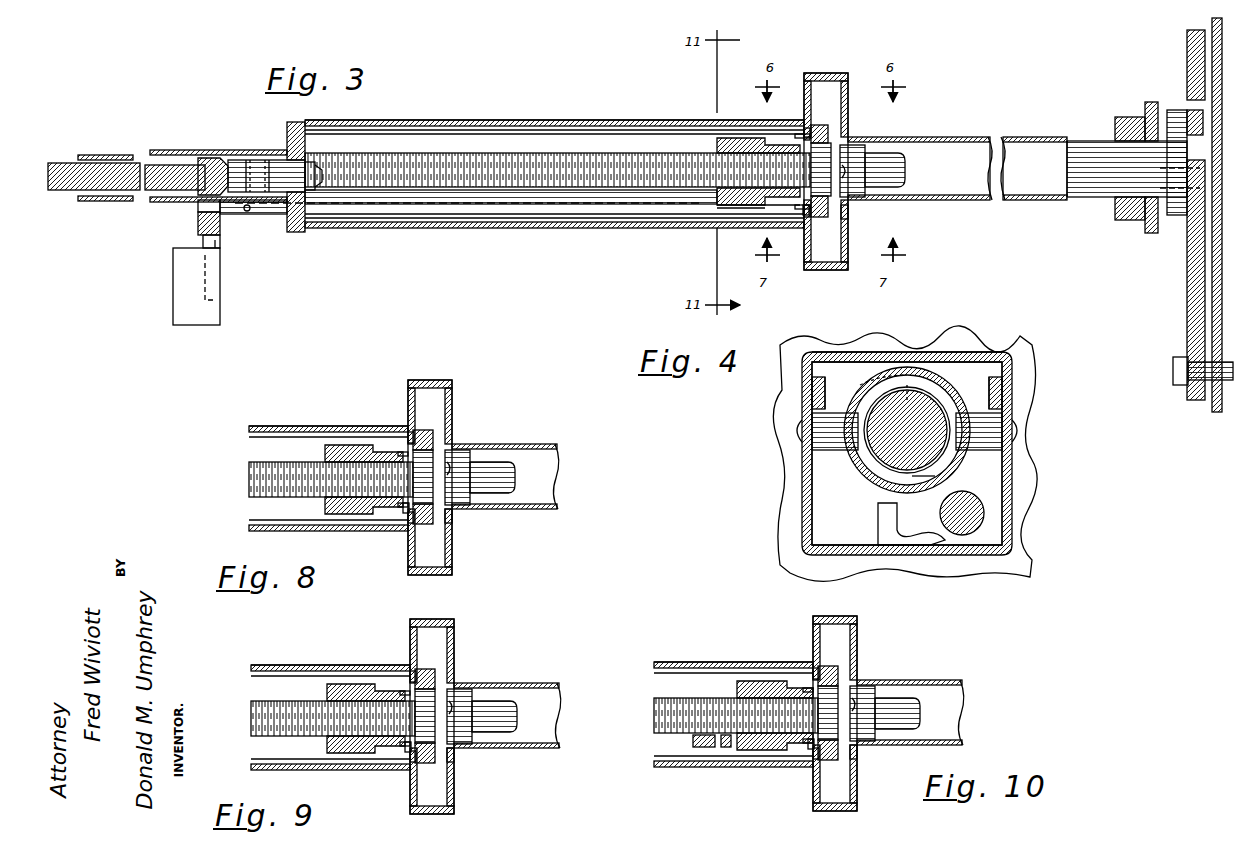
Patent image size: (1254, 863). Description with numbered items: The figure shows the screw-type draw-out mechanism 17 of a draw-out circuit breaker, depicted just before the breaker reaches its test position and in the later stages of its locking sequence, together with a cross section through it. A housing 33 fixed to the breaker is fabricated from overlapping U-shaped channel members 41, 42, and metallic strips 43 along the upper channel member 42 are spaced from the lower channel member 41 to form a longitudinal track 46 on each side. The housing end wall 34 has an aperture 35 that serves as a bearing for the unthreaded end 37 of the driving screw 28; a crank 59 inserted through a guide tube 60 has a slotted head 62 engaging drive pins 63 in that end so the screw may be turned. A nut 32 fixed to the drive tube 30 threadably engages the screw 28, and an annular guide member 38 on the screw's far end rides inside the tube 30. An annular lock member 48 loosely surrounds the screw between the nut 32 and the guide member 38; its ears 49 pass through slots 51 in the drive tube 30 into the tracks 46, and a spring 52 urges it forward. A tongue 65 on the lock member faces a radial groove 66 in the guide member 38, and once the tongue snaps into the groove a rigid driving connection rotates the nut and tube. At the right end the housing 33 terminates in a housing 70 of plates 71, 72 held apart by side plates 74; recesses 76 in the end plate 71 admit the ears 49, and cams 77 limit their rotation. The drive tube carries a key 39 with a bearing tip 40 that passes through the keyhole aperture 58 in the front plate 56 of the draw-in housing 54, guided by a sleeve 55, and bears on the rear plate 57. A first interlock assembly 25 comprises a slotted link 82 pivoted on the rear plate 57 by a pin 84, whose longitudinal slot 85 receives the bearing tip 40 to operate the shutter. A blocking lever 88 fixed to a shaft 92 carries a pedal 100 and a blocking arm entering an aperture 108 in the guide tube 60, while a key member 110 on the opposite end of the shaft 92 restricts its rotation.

In FIG. 3, the draw-out mechanism 17 is at (910, 115).
In FIG. 4, the draw-out mechanism 17 is at (745, 514).
In FIG. 8, the draw-out mechanism 17 is at (502, 407).
In FIG. 9, the draw-out mechanism 17 is at (509, 636).
In FIG. 10, the draw-out mechanism 17 is at (918, 639).
In FIG. 3, the first interlock assembly 25 is at (1120, 52).
In FIG. 3, the driving screw 28 is at (532, 160).
In FIG. 4, the driving screw 28 is at (905, 445).
In FIG. 8, the driving screw 28 is at (260, 472).
In FIG. 9, the driving screw 28 is at (317, 718).
In FIG. 10, the driving screw 28 is at (718, 715).
In FIG. 3, the drive tube 30 is at (988, 137).
In FIG. 4, the drive tube 30 is at (945, 380).
In FIG. 8, the drive tube 30 is at (545, 444).
In FIG. 9, the drive tube 30 is at (510, 701).
In FIG. 10, the drive tube 30 is at (916, 697).
In FIG. 3, the nut 32 is at (717, 145).
In FIG. 8, the nut 32 is at (325, 450).
In FIG. 9, the nut 32 is at (348, 715).
In FIG. 10, the nut 32 is at (753, 714).
In FIG. 3, the housing 33 is at (597, 118).
In FIG. 4, the housing 33 is at (1025, 382).
In FIG. 8, the housing 33 is at (340, 420).
In FIG. 9, the housing 33 is at (330, 633).
In FIG. 10, the housing 33 is at (733, 633).
In FIG. 3, the end wall 34 is at (296, 122).
In FIG. 3, the aperture 35 is at (305, 170).
In FIG. 3, the unthreaded end 37 is at (240, 165).
In FIG. 3, the annular guide member 38 is at (872, 153).
In FIG. 8, the annular guide member 38 is at (480, 461).
In FIG. 9, the annular guide member 38 is at (494, 693).
In FIG. 10, the annular guide member 38 is at (897, 689).
In FIG. 3, the key 39 is at (1177, 110).
In FIG. 3, the bearing tip 40 is at (1203, 122).
In FIG. 3, the lower channel member 41 is at (412, 130).
In FIG. 4, the lower channel member 41 is at (822, 555).
In FIG. 8, the lower channel member 41 is at (320, 437).
In FIG. 9, the lower channel member 41 is at (334, 713).
In FIG. 10, the lower channel member 41 is at (734, 714).
In FIG. 3, the upper channel member 42 is at (468, 120).
In FIG. 4, the upper channel member 42 is at (950, 352).
In FIG. 8, the upper channel member 42 is at (268, 426).
In FIG. 9, the upper channel member 42 is at (330, 712).
In FIG. 10, the upper channel member 42 is at (733, 713).
In FIG. 4, the metallic strips 43 is at (812, 385).
In FIG. 3, the longitudinal track 46 is at (630, 134).
In FIG. 4, the longitudinal track 46 is at (1002, 398).
In FIG. 8, the longitudinal track 46 is at (265, 437).
In FIG. 9, the longitudinal track 46 is at (274, 720).
In FIG. 10, the longitudinal track 46 is at (677, 721).
In FIG. 3, the annular lock member 48 is at (850, 145).
In FIG. 4, the annular lock member 48 is at (950, 476).
In FIG. 8, the annular lock member 48 is at (457, 477).
In FIG. 9, the annular lock member 48 is at (459, 716).
In FIG. 10, the annular lock member 48 is at (867, 726).
In FIG. 3, the ear 49 is at (821, 126).
In FIG. 4, the ear 49 is at (835, 413).
In FIG. 8, the ear 49 is at (426, 430).
In FIG. 9, the ear 49 is at (451, 725).
In FIG. 10, the ear 49 is at (852, 722).
In FIG. 3, the slot 51 is at (795, 136).
In FIG. 4, the slot 51 is at (870, 460).
In FIG. 8, the slot 51 is at (400, 450).
In FIG. 9, the slot 51 is at (388, 720).
In FIG. 10, the slot 51 is at (785, 716).
In FIG. 3, the spring 52 is at (803, 212).
In FIG. 8, the spring 52 is at (406, 512).
In FIG. 9, the spring 52 is at (400, 694).
In FIG. 10, the spring 52 is at (800, 766).
In FIG. 3, the draw-in housing 54 is at (1135, 232).
In FIG. 3, the guide sleeve 55 is at (1125, 220).
In FIG. 3, the front plate 56 is at (1151, 233).
In FIG. 3, the rear plate 57 is at (1222, 262).
In FIG. 3, the keyhole shaped aperture 58 is at (1120, 130).
In FIG. 3, the crank 59 is at (75, 165).
In FIG. 3, the guide tube 60 is at (122, 152).
In FIG. 3, the slotted head 62 is at (210, 165).
In FIG. 3, the drive pins 63 is at (262, 160).
In FIG. 3, the tongue 65 is at (835, 170).
In FIG. 4, the tongue 65 is at (907, 367).
In FIG. 8, the tongue 65 is at (440, 480).
In FIG. 9, the tongue 65 is at (428, 716).
In FIG. 10, the tongue 65 is at (833, 713).
In FIG. 3, the radial groove 66 is at (852, 171).
In FIG. 8, the radial groove 66 is at (456, 458).
In FIG. 9, the radial groove 66 is at (468, 736).
In FIG. 10, the radial groove 66 is at (882, 732).
In FIG. 3, the housing 70 is at (845, 74).
In FIG. 8, the housing 70 is at (448, 382).
In FIG. 9, the housing 70 is at (445, 699).
In FIG. 10, the housing 70 is at (857, 710).
In FIG. 3, the end plate 71 is at (804, 100).
In FIG. 4, the end plate 71 is at (1008, 560).
In FIG. 8, the end plate 71 is at (408, 390).
In FIG. 9, the end plate 71 is at (399, 706).
In FIG. 10, the end plate 71 is at (802, 712).
In FIG. 3, the plate 72 is at (848, 100).
In FIG. 8, the plate 72 is at (452, 393).
In FIG. 9, the plate 72 is at (466, 706).
In FIG. 10, the plate 72 is at (868, 713).
In FIG. 3, the side plates 74 is at (822, 73).
In FIG. 8, the side plates 74 is at (426, 380).
In FIG. 9, the side plates 74 is at (445, 707).
In FIG. 10, the side plates 74 is at (836, 713).
In FIG. 3, the recesses 76 is at (804, 124).
In FIG. 4, the recesses 76 is at (795, 428).
In FIG. 8, the recesses 76 is at (409, 431).
In FIG. 9, the recesses 76 is at (426, 721).
In FIG. 10, the recesses 76 is at (828, 718).
In FIG. 3, the cam 77 is at (848, 228).
In FIG. 8, the cam 77 is at (452, 535).
In FIG. 9, the cam 77 is at (468, 775).
In FIG. 10, the cam 77 is at (868, 773).
In FIG. 3, the slotted link 82 is at (1187, 290).
In FIG. 3, the pin 84 is at (1173, 372).
In FIG. 3, the longitudinal slot 85 is at (1205, 176).
In FIG. 3, the blocking lever 88 is at (218, 240).
In FIG. 3, the shaft 92 is at (256, 215).
In FIG. 4, the shaft 92 is at (985, 515).
In FIG. 3, the pedal 100 is at (176, 270).
In FIG. 3, the aperture 108 is at (198, 204).
In FIG. 3, the key member 110 is at (726, 208).
In FIG. 4, the key member 110 is at (898, 545).